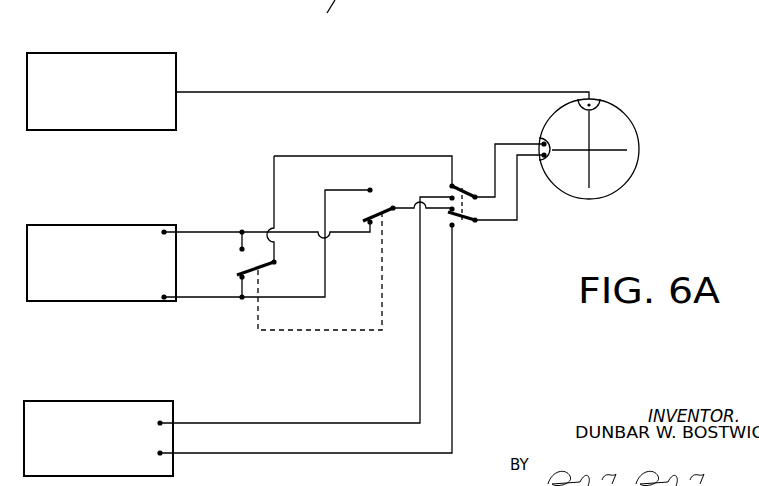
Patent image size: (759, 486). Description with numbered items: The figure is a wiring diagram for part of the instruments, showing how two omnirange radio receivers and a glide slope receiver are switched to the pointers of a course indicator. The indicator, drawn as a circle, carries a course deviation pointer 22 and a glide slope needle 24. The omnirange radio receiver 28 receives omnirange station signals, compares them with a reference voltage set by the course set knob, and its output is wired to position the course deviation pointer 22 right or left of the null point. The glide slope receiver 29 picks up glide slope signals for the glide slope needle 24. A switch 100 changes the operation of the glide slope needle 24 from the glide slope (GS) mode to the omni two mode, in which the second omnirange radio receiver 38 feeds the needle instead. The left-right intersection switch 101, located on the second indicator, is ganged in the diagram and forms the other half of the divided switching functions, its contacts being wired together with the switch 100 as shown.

The omnirange radio receiver 28 is at (163, 53).
The glide slope receiver 29 is at (163, 225).
The omnirange radio receiver 38 is at (157, 401).
The switch 100 is at (465, 190).
The left-right intersection switch 101 is at (380, 213).
The course deviation pointer 22 is at (588, 177).
The glide slope needle 24 is at (608, 150).